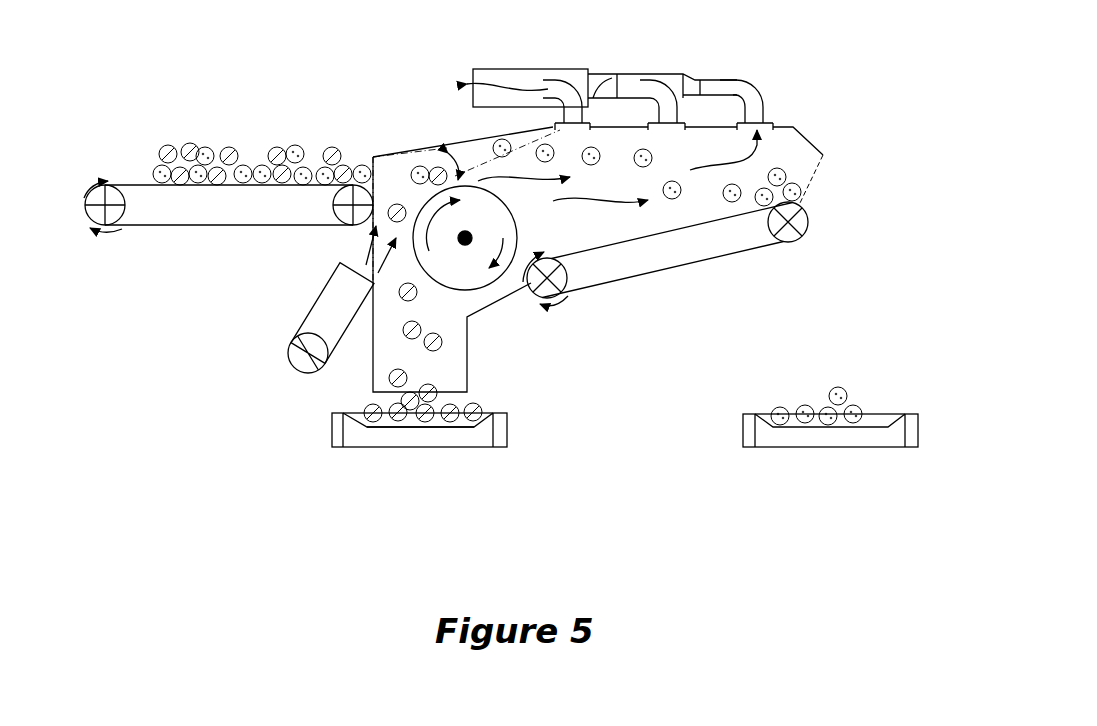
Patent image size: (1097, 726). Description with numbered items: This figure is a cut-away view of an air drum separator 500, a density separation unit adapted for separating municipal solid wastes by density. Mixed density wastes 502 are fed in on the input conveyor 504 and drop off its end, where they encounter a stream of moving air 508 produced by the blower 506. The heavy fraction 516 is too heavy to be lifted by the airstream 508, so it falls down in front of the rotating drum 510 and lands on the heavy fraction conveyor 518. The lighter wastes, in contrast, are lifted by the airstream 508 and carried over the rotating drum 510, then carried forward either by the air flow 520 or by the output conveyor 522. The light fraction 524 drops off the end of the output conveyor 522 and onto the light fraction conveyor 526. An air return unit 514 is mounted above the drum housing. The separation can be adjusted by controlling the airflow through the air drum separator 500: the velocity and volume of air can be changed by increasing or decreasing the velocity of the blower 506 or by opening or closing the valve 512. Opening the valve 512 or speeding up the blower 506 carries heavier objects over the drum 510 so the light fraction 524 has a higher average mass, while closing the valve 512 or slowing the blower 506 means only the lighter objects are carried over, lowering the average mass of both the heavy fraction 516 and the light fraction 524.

The air drum separator 500 is at (176, 295).
The mixed density wastes 502 is at (229, 150).
The input conveyor 504 is at (190, 213).
The blower 506 is at (303, 370).
The stream of moving air 508 is at (364, 246).
The rotating drum 510 is at (486, 290).
The valve 512 is at (452, 142).
The air return unit 514 is at (598, 72).
The heavy fraction 516 is at (450, 440).
The heavy fraction conveyor 518 is at (366, 437).
The air flow 520 is at (611, 200).
The output conveyor 522 is at (678, 262).
The light fraction 524 is at (838, 387).
The light fraction conveyor 526 is at (880, 448).